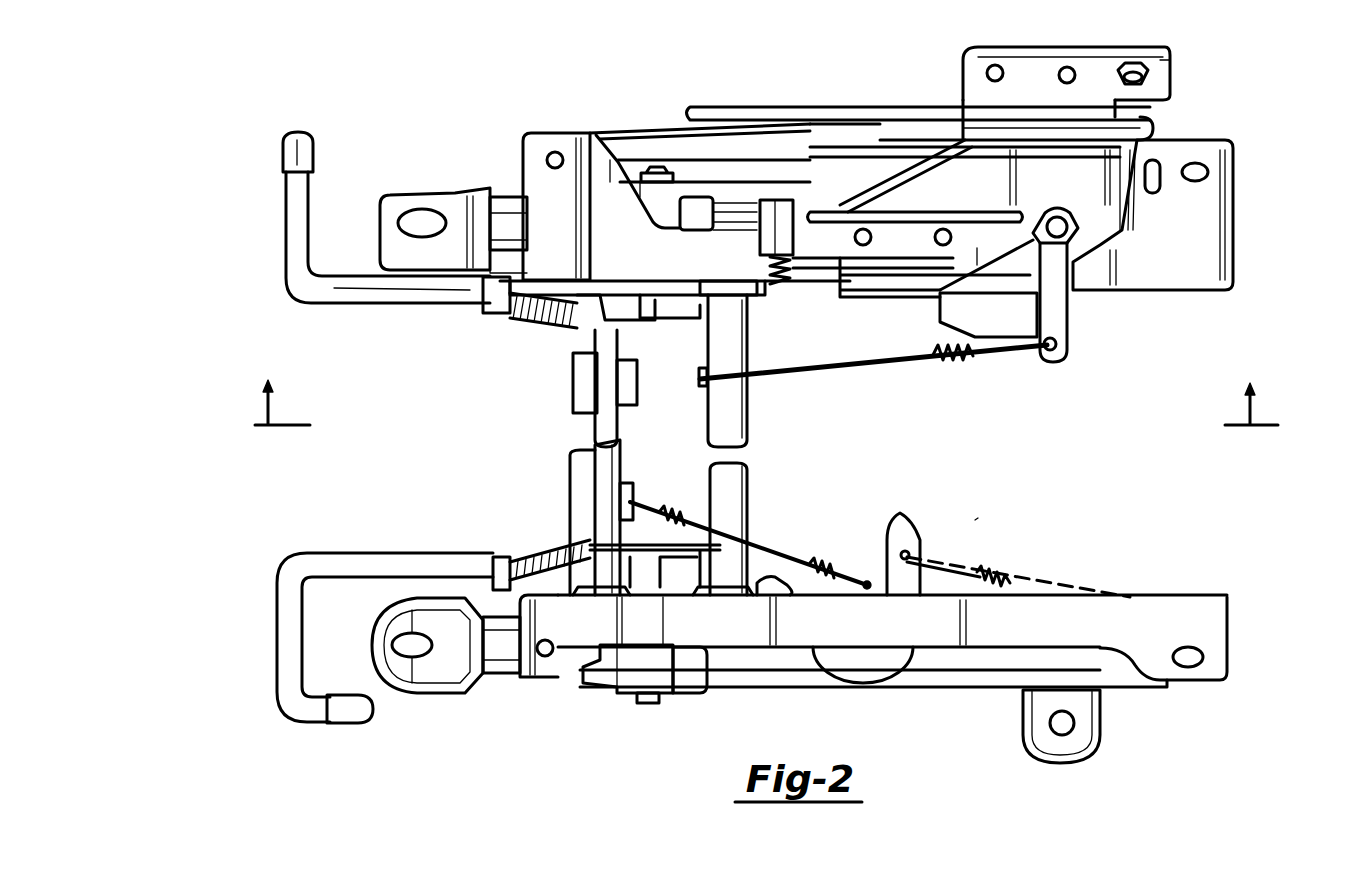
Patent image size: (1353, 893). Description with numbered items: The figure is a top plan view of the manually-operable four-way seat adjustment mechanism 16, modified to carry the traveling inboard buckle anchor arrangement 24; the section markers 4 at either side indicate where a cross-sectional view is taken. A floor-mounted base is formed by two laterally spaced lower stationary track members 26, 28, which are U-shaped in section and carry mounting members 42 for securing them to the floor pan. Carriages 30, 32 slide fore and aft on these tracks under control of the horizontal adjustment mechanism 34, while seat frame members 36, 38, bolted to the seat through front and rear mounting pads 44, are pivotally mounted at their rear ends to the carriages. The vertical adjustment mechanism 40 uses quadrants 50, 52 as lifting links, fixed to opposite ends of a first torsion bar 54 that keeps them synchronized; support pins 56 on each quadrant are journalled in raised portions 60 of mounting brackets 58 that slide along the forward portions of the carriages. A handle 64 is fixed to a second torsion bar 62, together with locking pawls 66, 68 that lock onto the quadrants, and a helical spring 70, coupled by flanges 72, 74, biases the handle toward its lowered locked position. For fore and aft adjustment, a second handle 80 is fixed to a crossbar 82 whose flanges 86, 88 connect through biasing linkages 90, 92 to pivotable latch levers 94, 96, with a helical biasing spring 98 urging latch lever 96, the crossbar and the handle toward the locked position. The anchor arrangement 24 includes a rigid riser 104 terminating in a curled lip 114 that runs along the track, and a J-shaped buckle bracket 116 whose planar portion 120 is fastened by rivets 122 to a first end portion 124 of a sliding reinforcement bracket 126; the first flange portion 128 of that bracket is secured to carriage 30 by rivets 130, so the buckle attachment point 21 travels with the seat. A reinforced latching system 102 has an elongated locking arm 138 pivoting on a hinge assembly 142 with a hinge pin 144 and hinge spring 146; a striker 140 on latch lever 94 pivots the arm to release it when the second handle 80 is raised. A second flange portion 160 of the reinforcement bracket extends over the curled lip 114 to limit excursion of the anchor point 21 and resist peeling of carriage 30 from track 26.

The section line 4- 4 is at (757, 395).
The seat adjustment mechanism 16 is at (975, 521).
The buckle attachment point 21 is at (1148, 80).
The traveling inboard buckle anchor arrangement 24 is at (1185, 132).
The lower stationary track member 26 is at (505, 200).
The lower stationary track member 28 is at (500, 672).
The carriage 30 is at (780, 205).
The carriage 32 is at (800, 670).
The horizontal adjustment mechanism 34 is at (510, 552).
The seat frame member 36 is at (640, 268).
The seat frame member 38 is at (885, 641).
The vertical adjustment mechanism 40 is at (503, 322).
The mounting member 42 is at (438, 205).
The mounting pad 44 is at (545, 145).
The quadrant 50 is at (760, 300).
The quadrant 52 is at (785, 590).
The first torsion bar 54 is at (750, 500).
The support pin 56 is at (655, 175).
The mounting bracket 58 is at (690, 197).
The raised portion 60 is at (663, 210).
The second torsion bar 62 is at (622, 456).
The handle 64 is at (293, 243).
The locking pawl 66 is at (650, 318).
The locking pawl 68 is at (715, 535).
The helical spring 70 is at (543, 320).
The flange 72 is at (490, 297).
The flange 74 is at (590, 340).
The second handle 80 is at (290, 617).
The crossbar 82 is at (580, 456).
The flange 86 is at (633, 400).
The flange 88 is at (635, 490).
The biasing linkage 90 is at (832, 378).
The biasing linkage 92 is at (790, 557).
The latch lever 94 is at (1067, 322).
The latch lever 96 is at (900, 540).
The helical biasing spring 98 is at (1030, 578).
The reinforced latching system 102 is at (882, 295).
The riser 104 is at (648, 143).
The curled lip 114 is at (718, 118).
The buckle bracket 116 is at (1078, 39).
The planar portion 120 is at (1165, 52).
The rivets 122 is at (1067, 67).
The first end portion 124 is at (975, 77).
The sliding reinforcement bracket 126 is at (900, 162).
The first flange portion 128 is at (1083, 216).
The rivets 130 is at (945, 230).
The locking arm 138 is at (960, 357).
The striker 140 is at (963, 277).
The hinge assembly 142 is at (877, 203).
The hinge pin 144 is at (920, 270).
The hinge spring 146 is at (790, 265).
The second flange portion 160 is at (958, 102).